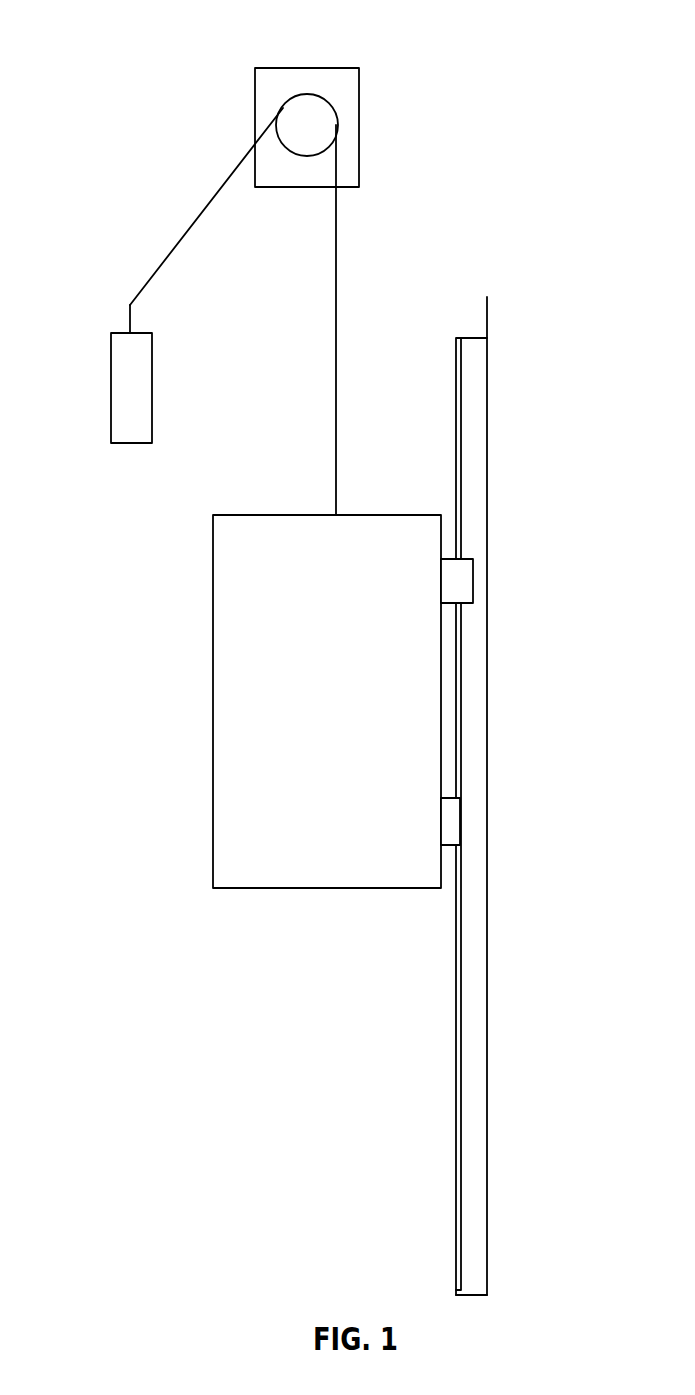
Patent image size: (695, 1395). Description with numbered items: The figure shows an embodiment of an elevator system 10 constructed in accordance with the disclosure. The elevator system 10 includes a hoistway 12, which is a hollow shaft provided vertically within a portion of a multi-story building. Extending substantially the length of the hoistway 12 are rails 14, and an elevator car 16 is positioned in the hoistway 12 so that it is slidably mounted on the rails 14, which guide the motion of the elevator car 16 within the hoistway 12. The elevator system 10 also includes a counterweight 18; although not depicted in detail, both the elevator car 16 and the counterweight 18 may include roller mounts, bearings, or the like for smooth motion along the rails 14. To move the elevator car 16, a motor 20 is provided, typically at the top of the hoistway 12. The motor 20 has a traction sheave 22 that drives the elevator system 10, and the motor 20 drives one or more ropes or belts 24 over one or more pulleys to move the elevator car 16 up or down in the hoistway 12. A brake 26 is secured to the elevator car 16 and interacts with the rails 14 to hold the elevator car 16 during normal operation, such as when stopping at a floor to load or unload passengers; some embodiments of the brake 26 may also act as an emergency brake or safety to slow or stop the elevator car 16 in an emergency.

The elevator system 10 is at (118, 36).
The hoistway 12 is at (262, 1040).
The rails 14 is at (457, 1105).
The elevator car 16 is at (342, 715).
The counterweight 18 is at (119, 377).
The motor 20 is at (343, 89).
The traction sheave 22 is at (317, 129).
The belts 24 is at (336, 322).
The brake 26 is at (468, 578).